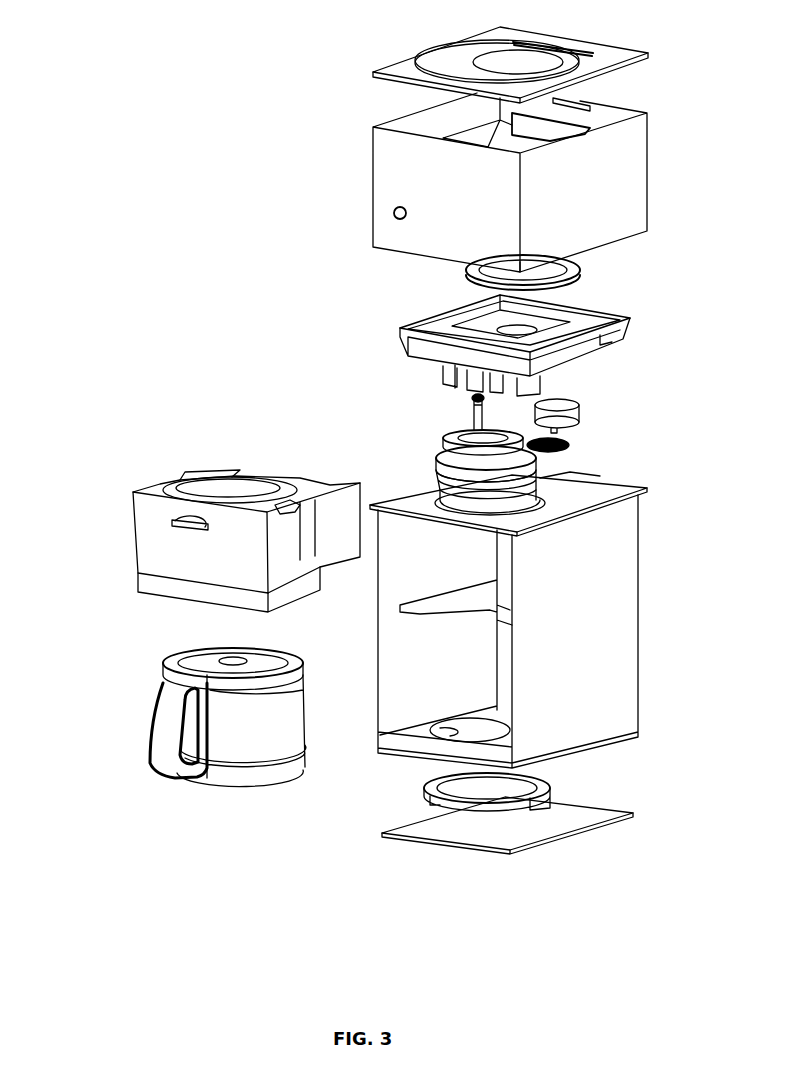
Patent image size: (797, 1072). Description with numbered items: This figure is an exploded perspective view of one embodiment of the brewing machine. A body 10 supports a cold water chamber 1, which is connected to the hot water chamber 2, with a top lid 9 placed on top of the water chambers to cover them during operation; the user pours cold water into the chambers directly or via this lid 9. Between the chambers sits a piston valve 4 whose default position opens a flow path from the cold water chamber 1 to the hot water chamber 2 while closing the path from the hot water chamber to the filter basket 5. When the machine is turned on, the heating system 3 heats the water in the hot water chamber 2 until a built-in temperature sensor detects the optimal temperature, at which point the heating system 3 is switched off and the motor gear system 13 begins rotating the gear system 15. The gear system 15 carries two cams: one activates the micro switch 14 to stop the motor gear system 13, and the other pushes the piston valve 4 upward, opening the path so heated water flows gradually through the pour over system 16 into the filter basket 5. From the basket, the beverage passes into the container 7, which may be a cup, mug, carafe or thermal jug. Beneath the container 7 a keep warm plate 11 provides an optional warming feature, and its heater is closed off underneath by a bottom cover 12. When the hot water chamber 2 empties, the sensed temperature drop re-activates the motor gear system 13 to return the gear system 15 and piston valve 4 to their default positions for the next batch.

The cold water chamber 1 is at (614, 178).
The hot water chamber 2 is at (549, 347).
The heating system 3 is at (567, 280).
The piston valve 4 is at (468, 400).
The filter basket 5 is at (230, 492).
The container 7 is at (228, 774).
The top lid 9 is at (378, 70).
The body 10 is at (614, 610).
The keep warm plate 11 is at (549, 780).
The bottom cover 12 is at (512, 851).
The motor gear system 13 is at (584, 417).
The micro switch 14 is at (445, 425).
The gear system 15 is at (537, 455).
The pour over system 16 is at (439, 460).